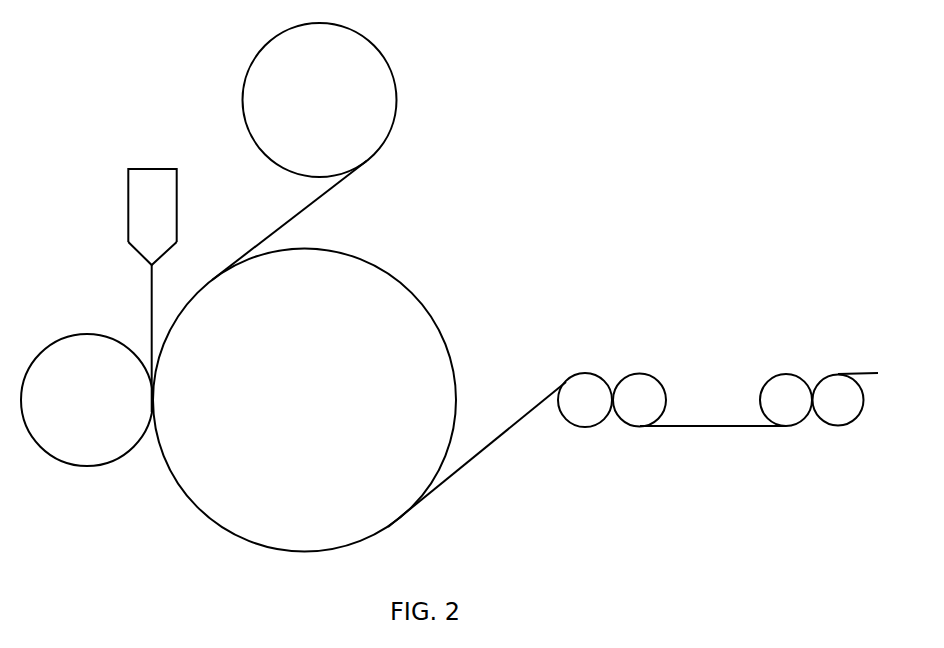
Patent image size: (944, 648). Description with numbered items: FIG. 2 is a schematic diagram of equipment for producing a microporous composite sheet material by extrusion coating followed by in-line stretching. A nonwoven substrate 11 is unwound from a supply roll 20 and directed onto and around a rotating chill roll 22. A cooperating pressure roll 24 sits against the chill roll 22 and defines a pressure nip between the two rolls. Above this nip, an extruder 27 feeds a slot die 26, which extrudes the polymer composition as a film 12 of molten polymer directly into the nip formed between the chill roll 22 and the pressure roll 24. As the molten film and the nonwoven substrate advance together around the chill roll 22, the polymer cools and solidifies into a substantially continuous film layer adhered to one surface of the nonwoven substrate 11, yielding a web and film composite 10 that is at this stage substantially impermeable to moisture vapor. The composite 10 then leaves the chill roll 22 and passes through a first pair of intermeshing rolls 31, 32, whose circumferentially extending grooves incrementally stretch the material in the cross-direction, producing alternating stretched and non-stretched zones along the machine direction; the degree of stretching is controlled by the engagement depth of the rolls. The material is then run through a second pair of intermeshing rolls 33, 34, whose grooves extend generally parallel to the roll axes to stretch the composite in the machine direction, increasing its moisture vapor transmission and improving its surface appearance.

The composite web / laminate 10 is at (482, 452).
The nonwoven substrate 11 is at (308, 210).
The film of molten polymer 12 is at (151, 317).
The supply roll 20 is at (382, 77).
The chill roll 22 is at (435, 317).
The pressure roll 24 is at (88, 467).
The slot die 26 is at (150, 265).
The extruder 27 is at (128, 210).
The first intermeshing roll 31 is at (582, 373).
The first intermeshing roll 32 is at (641, 373).
The second intermeshing roll 33 is at (785, 426).
The second intermeshing roll 34 is at (835, 426).